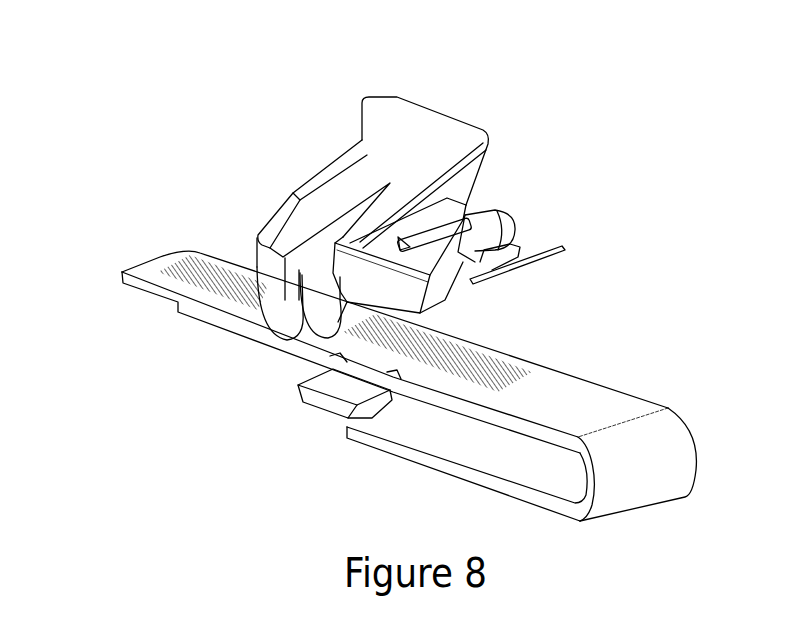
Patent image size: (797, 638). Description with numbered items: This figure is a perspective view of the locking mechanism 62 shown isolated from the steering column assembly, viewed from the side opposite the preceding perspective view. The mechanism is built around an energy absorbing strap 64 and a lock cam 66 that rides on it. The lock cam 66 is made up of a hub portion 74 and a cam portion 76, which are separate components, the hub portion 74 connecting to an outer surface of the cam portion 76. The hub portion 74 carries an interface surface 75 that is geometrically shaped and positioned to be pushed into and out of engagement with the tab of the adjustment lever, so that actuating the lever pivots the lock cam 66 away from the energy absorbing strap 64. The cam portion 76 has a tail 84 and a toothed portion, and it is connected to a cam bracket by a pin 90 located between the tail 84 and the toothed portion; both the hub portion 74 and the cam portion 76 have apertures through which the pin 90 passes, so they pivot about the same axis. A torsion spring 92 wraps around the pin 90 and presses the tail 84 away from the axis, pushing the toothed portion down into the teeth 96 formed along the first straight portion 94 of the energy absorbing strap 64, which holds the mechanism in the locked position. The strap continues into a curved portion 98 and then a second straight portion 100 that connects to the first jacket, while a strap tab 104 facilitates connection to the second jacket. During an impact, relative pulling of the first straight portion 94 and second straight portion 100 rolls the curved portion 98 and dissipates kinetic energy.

The locking mechanism 62 is at (709, 122).
The energy absorbing strap 64 is at (122, 288).
The lock cam 66 is at (379, 93).
The hub portion 74 is at (335, 170).
The interface surface 75 is at (313, 173).
The cam portion 76 is at (447, 277).
The tail 84 is at (458, 218).
The pin 90 is at (498, 215).
The torsion spring 92 is at (566, 246).
The first straight portion 94 is at (192, 247).
The teeth 96 is at (232, 272).
The curved portion 98 is at (672, 427).
The second straight portion 100 is at (428, 445).
The strap tab 104 is at (328, 385).